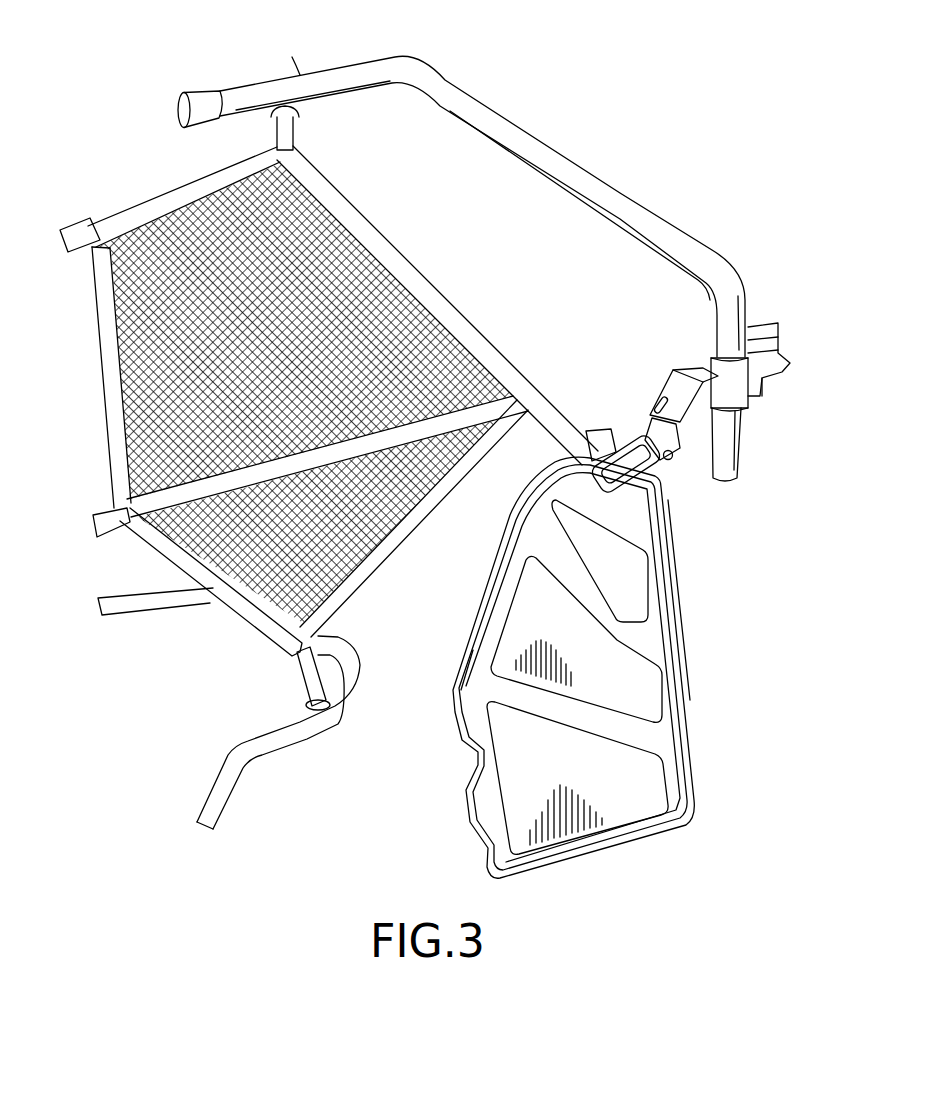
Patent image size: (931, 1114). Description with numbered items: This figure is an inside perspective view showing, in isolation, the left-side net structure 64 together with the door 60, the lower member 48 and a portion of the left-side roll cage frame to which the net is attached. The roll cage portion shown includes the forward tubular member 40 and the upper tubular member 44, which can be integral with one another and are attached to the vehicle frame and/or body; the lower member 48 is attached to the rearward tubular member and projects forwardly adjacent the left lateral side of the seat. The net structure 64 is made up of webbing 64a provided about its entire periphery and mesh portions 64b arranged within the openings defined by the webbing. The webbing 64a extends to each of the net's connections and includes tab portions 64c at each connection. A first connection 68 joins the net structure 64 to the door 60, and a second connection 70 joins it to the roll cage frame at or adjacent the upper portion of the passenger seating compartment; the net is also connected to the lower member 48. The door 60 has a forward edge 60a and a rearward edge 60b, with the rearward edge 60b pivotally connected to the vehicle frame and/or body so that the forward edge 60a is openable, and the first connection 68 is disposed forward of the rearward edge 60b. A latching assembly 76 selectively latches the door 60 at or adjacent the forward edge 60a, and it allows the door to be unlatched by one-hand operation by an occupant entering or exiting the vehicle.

The forward tubular member 40 is at (586, 186).
The upper tubular member 44 is at (288, 78).
The lower member 48 is at (235, 770).
The door 60 is at (627, 797).
The forward edge 60a is at (680, 637).
The rearward edge 60b is at (455, 702).
The net structure 64 is at (310, 392).
The webbing 64a is at (430, 300).
The mesh portion 64b is at (150, 322).
The tab portion 64c is at (85, 220).
The first connection 68 is at (596, 410).
The second connection 70 is at (318, 127).
The latching assembly 76 is at (695, 462).